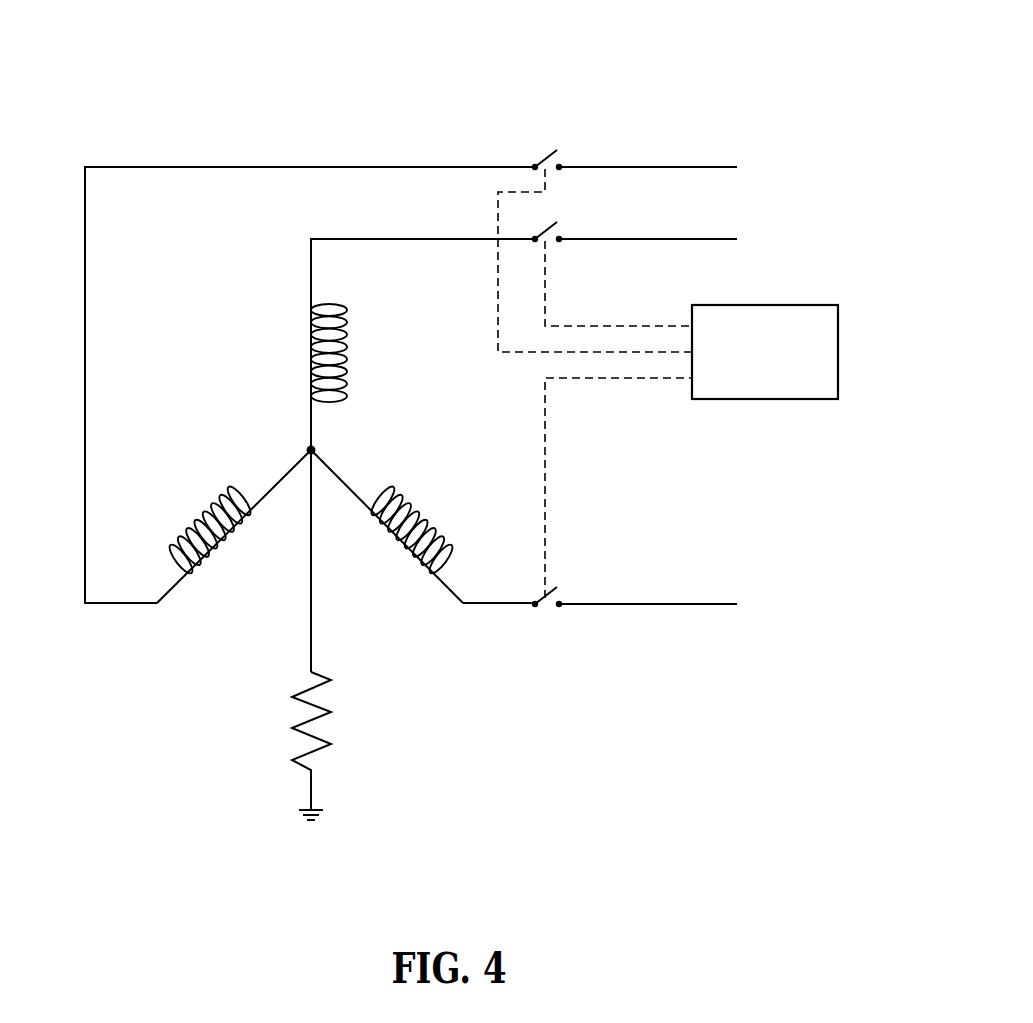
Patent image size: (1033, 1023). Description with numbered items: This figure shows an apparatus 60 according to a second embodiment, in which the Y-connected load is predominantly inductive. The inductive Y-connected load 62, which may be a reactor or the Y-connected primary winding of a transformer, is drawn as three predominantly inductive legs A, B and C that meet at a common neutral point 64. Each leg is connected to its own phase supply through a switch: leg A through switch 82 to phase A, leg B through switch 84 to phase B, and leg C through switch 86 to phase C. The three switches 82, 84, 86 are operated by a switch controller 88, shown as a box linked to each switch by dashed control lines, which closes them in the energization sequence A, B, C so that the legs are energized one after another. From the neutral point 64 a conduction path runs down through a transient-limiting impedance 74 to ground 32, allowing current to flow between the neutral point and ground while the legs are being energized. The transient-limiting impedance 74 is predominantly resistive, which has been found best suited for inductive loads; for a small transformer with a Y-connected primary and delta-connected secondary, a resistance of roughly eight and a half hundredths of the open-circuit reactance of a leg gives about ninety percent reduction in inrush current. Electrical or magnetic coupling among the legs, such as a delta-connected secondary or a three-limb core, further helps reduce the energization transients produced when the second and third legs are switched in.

The apparatus 60 is at (678, 66).
The switch 82 is at (557, 142).
The switch 84 is at (557, 214).
The switch 86 is at (557, 582).
The switch controller 88 is at (753, 386).
The inductive Y-connected load 62 is at (310, 453).
The neutral point 64 is at (309, 448).
The transient-limiting impedance 74 is at (350, 694).
The ground 32 is at (321, 810).
The leg A is at (207, 500).
The leg B is at (348, 338).
The leg C is at (413, 500).